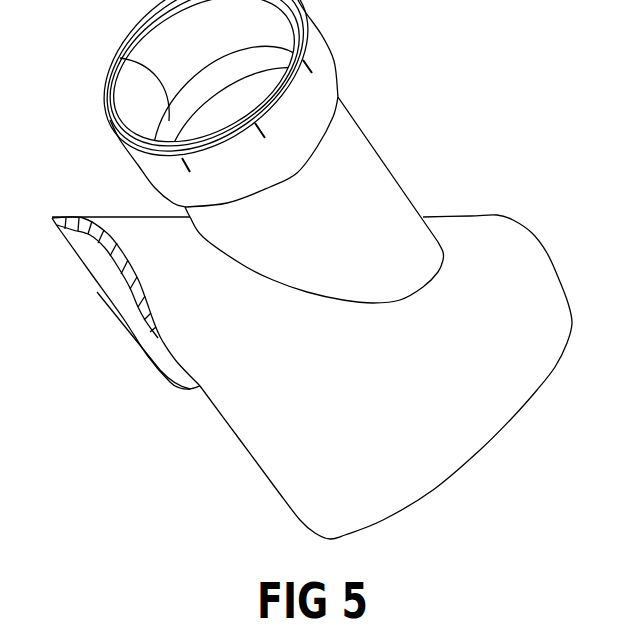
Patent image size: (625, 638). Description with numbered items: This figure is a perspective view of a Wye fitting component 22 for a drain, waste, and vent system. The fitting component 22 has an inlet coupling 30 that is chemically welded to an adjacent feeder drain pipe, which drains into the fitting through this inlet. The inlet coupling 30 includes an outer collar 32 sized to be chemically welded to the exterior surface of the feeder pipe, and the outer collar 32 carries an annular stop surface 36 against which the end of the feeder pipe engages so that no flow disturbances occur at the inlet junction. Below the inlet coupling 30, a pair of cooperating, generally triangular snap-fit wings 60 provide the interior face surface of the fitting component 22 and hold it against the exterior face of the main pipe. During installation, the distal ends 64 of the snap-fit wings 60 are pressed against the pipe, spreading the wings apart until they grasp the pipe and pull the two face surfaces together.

The Wye fitting component 22 is at (430, 96).
The inlet coupling 30 is at (128, 172).
The outer collar 32 is at (315, 50).
The annular stop surface 36 is at (120, 58).
The snap-fit wings 60 is at (100, 270).
The distal ends 64 is at (188, 390).